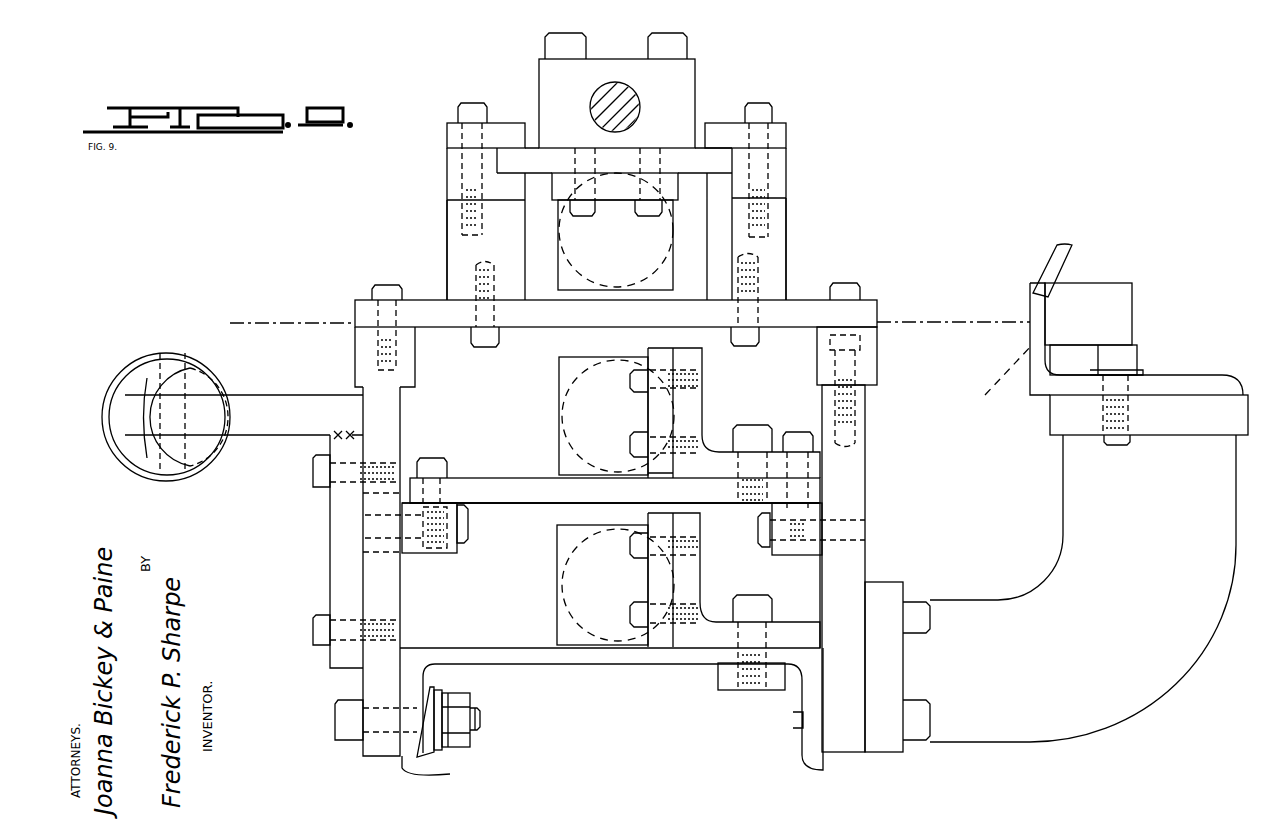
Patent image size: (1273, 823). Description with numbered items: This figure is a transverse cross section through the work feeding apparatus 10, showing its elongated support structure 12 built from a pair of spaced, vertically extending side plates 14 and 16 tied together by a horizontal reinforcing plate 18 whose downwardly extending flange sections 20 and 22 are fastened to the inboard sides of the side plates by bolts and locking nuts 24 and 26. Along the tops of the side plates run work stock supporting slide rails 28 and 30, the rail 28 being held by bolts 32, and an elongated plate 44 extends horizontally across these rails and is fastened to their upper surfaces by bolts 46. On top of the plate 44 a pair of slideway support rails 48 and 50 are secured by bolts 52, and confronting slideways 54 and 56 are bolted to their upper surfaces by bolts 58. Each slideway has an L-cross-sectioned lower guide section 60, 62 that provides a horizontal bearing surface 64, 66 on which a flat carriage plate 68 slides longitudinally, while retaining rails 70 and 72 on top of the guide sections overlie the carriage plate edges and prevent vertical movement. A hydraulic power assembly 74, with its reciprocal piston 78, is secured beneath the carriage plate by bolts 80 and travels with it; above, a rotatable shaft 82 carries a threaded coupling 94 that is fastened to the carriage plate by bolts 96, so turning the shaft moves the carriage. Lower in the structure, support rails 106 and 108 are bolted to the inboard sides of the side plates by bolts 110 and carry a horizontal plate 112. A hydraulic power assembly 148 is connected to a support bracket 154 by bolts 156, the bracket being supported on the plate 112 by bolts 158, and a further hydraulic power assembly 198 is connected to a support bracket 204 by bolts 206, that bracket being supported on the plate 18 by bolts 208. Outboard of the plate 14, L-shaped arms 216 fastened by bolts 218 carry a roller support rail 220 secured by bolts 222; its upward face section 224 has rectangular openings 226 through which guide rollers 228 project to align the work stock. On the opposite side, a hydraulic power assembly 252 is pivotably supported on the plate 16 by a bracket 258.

The work feeding apparatus 10 is at (642, 167).
The elongated support structure 12 is at (568, 700).
The side plate 14 is at (866, 457).
The side plate 16 is at (402, 608).
The reinforcing plate 18 is at (456, 648).
The flange section 20 is at (808, 688).
The flange section 22 is at (420, 772).
The bolts 24 is at (482, 722).
The locking nuts 26 is at (468, 697).
The slide rail 28 is at (880, 355).
The slide rail 30 is at (353, 356).
The bolts 32 is at (857, 372).
The elongated plate 44 is at (446, 330).
The bolts 46 is at (372, 284).
The slideway support rail 48 is at (792, 244).
The slideway support rail 50 is at (445, 265).
The bolts 52 is at (487, 348).
The slideway 54 is at (795, 170).
The slideway 56 is at (447, 173).
The bolts 58 is at (467, 102).
The lower guide section 60 is at (790, 160).
The lower guide section 62 is at (447, 157).
The bearing surface 64 is at (726, 175).
The bearing surface 66 is at (522, 195).
The carriage plate 68 is at (540, 225).
The retaining rail 70 is at (712, 122).
The retaining rail 72 is at (508, 122).
The hydraulic power assembly 74 is at (722, 290).
The piston 78 is at (615, 186).
The bolts 80 is at (650, 222).
The shaft 82 is at (630, 92).
The annular sleeve or coupling 94 is at (700, 68).
The bolts 96 is at (652, 46).
The support rail 106 is at (824, 558).
The support rail 108 is at (462, 552).
The bolts 110 is at (472, 527).
The horizontal plate 112 is at (548, 504).
The hydraulic power assembly 148 is at (520, 478).
The support bracket 154 is at (705, 405).
The bolts 156 is at (630, 380).
The bolts 158 is at (752, 426).
The hydraulic power assembly 198 is at (556, 628).
The support bracket 204 is at (702, 588).
The bolts 206 is at (630, 545).
The bolts 208 is at (773, 600).
The L-shaped arms 216 is at (1160, 692).
The bolts 218 is at (935, 620).
The roller support rail 220 is at (1180, 380).
The bolts 222 is at (1120, 447).
The face section 224 is at (1042, 320).
The rectangular openings 226 is at (990, 381).
The guide rollers 228 is at (1138, 292).
The hydraulic power assembly 252 is at (180, 445).
The bracket 258 is at (283, 428).